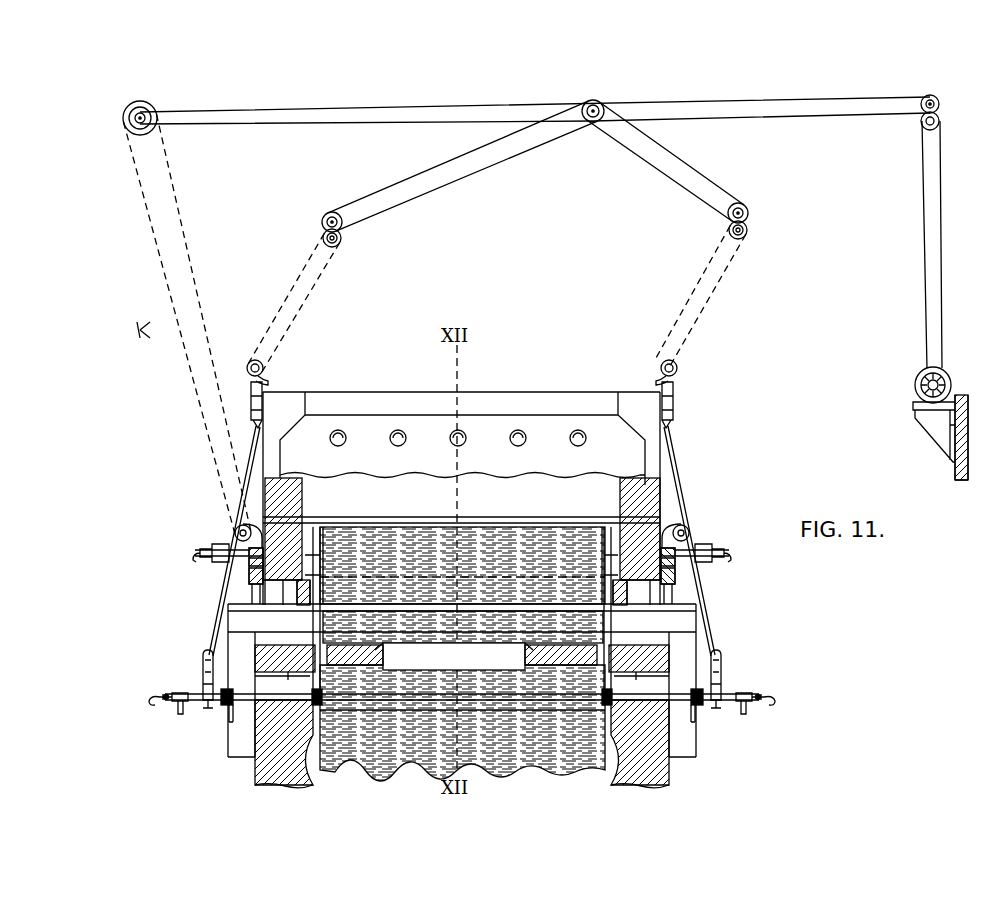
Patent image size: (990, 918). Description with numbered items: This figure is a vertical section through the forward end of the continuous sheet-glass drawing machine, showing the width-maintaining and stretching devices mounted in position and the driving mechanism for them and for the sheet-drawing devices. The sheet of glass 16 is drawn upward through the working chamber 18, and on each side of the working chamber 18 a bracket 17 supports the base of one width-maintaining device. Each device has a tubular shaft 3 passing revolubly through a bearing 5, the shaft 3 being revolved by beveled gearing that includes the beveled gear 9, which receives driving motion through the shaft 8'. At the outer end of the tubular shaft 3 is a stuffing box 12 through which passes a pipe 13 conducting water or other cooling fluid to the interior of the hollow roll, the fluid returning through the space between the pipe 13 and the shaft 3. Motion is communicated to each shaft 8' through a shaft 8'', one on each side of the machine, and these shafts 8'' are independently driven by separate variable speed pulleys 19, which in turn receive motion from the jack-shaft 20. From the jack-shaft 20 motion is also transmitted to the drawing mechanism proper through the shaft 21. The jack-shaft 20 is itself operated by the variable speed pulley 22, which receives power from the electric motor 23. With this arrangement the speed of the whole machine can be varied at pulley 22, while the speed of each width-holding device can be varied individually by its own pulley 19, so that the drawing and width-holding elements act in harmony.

The tubular shaft 3 is at (463, 742).
The bearing 5 is at (463, 662).
The shaft 8' is at (461, 679).
The shaft 8'' is at (450, 508).
The beveled gear 9 is at (465, 726).
The stuffing box 12 is at (469, 725).
The pipe 13 is at (462, 684).
The sheet of glass 16 is at (462, 680).
The bracket 17 is at (228, 706).
The working chamber 18 is at (270, 777).
The variable speed pulley 19 is at (342, 233).
The jack-shaft 20 is at (591, 124).
The shaft 21 is at (152, 128).
The variable speed pulley 22 is at (920, 123).
The electric motor 23 is at (914, 384).